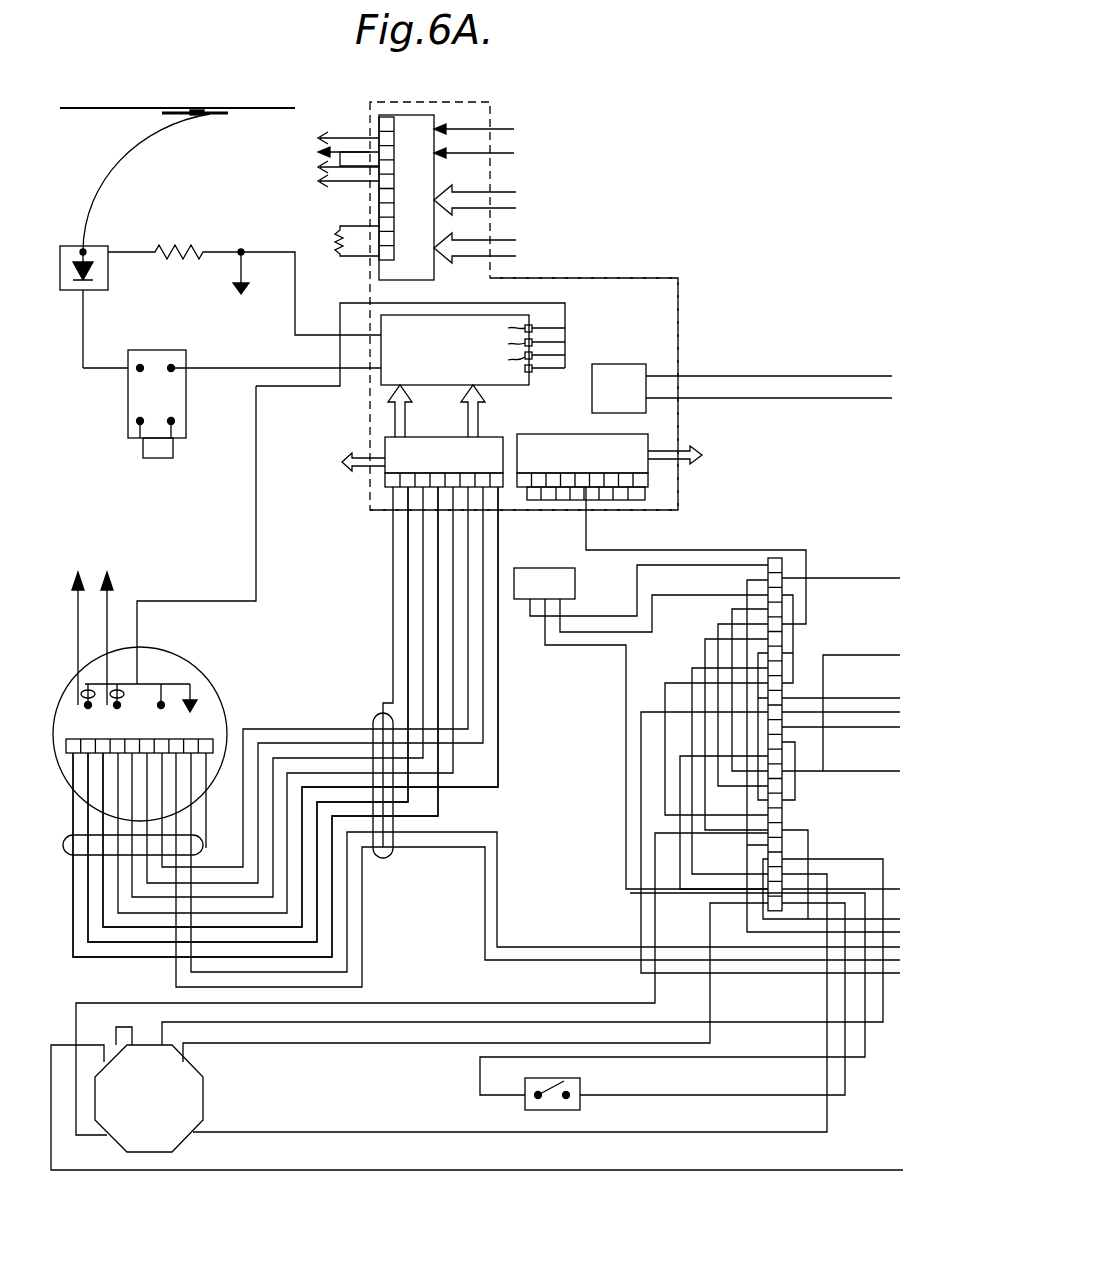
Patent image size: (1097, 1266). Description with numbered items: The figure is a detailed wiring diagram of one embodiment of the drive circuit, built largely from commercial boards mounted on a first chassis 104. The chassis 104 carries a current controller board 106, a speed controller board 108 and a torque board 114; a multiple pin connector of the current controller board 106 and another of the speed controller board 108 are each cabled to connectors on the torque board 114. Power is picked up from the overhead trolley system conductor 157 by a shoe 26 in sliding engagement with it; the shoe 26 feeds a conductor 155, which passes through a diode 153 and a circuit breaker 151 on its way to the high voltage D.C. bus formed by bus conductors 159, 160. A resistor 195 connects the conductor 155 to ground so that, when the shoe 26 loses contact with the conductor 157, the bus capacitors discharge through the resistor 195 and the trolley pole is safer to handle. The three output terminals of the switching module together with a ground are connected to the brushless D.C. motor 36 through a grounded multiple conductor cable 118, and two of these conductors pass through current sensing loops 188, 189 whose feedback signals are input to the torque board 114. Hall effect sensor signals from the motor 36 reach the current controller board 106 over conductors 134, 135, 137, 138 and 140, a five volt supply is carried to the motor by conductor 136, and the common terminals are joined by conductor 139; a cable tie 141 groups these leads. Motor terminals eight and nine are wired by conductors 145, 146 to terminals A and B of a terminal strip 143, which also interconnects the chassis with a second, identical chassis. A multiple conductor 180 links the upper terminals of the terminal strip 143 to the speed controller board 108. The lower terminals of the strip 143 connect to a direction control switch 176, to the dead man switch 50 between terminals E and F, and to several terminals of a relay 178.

The overhead trolley system conductor 157 is at (133, 108).
The shoe 26 is at (218, 114).
The conductor 155 is at (105, 175).
The resistor 195 is at (178, 248).
The diode 153 is at (108, 288).
The circuit breaker 151 is at (128, 388).
The grounded multiple conductor cable 118 is at (256, 528).
The torque board 114 is at (440, 100).
The first chassis 104 is at (612, 278).
The current controller board 106 is at (448, 437).
The speed controller board 108 is at (575, 434).
The bus conductor 159 is at (818, 376).
The bus conductor 160 is at (832, 398).
The motor 36 is at (190, 662).
The current sensing loop 188 is at (85, 696).
The current sensing loop 189 is at (120, 696).
The conductor 134 is at (73, 918).
The conductor 135 is at (108, 942).
The conductor 136 is at (140, 928).
The conductor 137 is at (302, 770).
The conductor 138 is at (317, 755).
The conductor 139 is at (332, 745).
The conductor 140 is at (374, 724).
The cable tie 141 is at (205, 824).
The conductor 145 is at (362, 946).
The conductor 146 is at (347, 900).
The direction control switch 176 is at (641, 727).
The multiple conductor 180 is at (692, 548).
The terminal strip 143 is at (772, 544).
The relay 178 is at (203, 1098).
The dead man switch 50 is at (576, 1070).